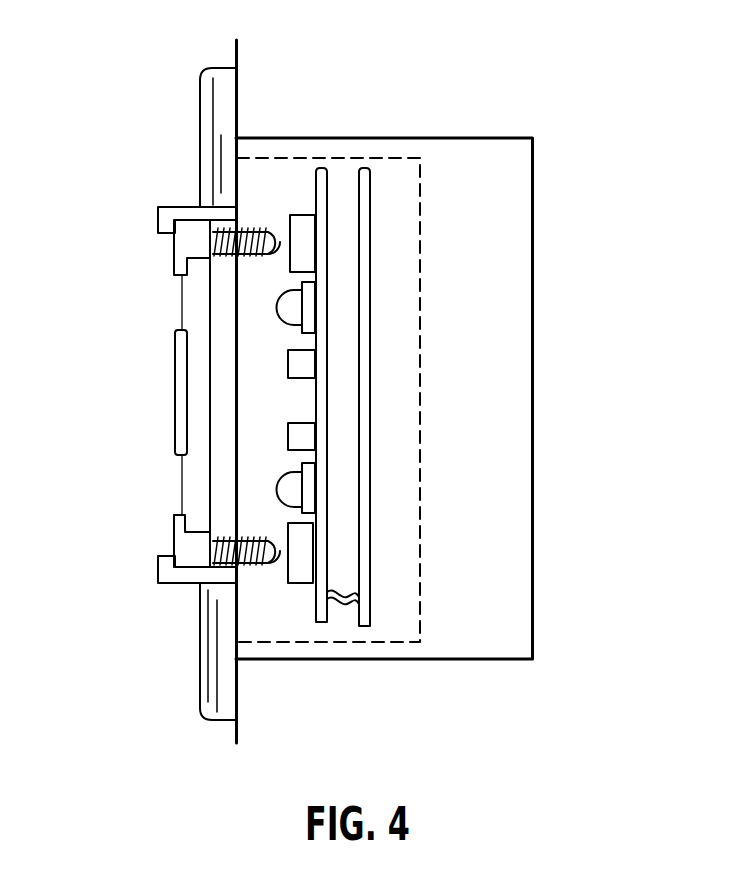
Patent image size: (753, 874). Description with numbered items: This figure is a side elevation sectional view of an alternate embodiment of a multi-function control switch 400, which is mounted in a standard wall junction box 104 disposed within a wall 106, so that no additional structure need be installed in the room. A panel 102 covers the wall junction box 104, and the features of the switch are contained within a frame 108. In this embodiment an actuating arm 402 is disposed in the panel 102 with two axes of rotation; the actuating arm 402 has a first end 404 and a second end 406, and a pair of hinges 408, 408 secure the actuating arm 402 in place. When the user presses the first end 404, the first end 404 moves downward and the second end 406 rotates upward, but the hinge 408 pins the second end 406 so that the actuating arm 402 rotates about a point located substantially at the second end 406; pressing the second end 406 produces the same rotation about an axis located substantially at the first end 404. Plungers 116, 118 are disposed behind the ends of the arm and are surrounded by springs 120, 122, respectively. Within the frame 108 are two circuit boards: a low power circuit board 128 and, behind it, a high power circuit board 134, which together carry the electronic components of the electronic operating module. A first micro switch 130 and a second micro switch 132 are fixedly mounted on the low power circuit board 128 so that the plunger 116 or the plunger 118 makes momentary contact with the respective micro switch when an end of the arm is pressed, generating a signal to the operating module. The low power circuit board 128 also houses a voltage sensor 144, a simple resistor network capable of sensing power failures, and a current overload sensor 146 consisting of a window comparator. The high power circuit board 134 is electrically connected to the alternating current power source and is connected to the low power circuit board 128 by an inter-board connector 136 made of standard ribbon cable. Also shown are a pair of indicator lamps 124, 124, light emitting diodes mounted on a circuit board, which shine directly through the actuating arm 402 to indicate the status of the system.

The multi-function control switch 400 is at (552, 576).
The panel 102 is at (200, 150).
The wall junction box 104 is at (535, 147).
The wall 106 is at (236, 52).
The frame 108 is at (422, 255).
The plunger 116 is at (268, 567).
The plunger 118 is at (275, 230).
The spring 120 is at (223, 568).
The spring 122 is at (247, 227).
The indicator lamp 124 is at (277, 310).
The low power circuit board 128 is at (320, 623).
The first micro switch 130 is at (305, 570).
The second micro switch 132 is at (303, 212).
The high power circuit board 134 is at (365, 628).
The inter-board connector 136 is at (342, 605).
The voltage sensor 144 is at (305, 435).
The current overload sensor 146 is at (305, 360).
The actuating arm 402 is at (175, 378).
The first end 404 is at (192, 548).
The second end 406 is at (193, 245).
The hinge 408 is at (185, 207).